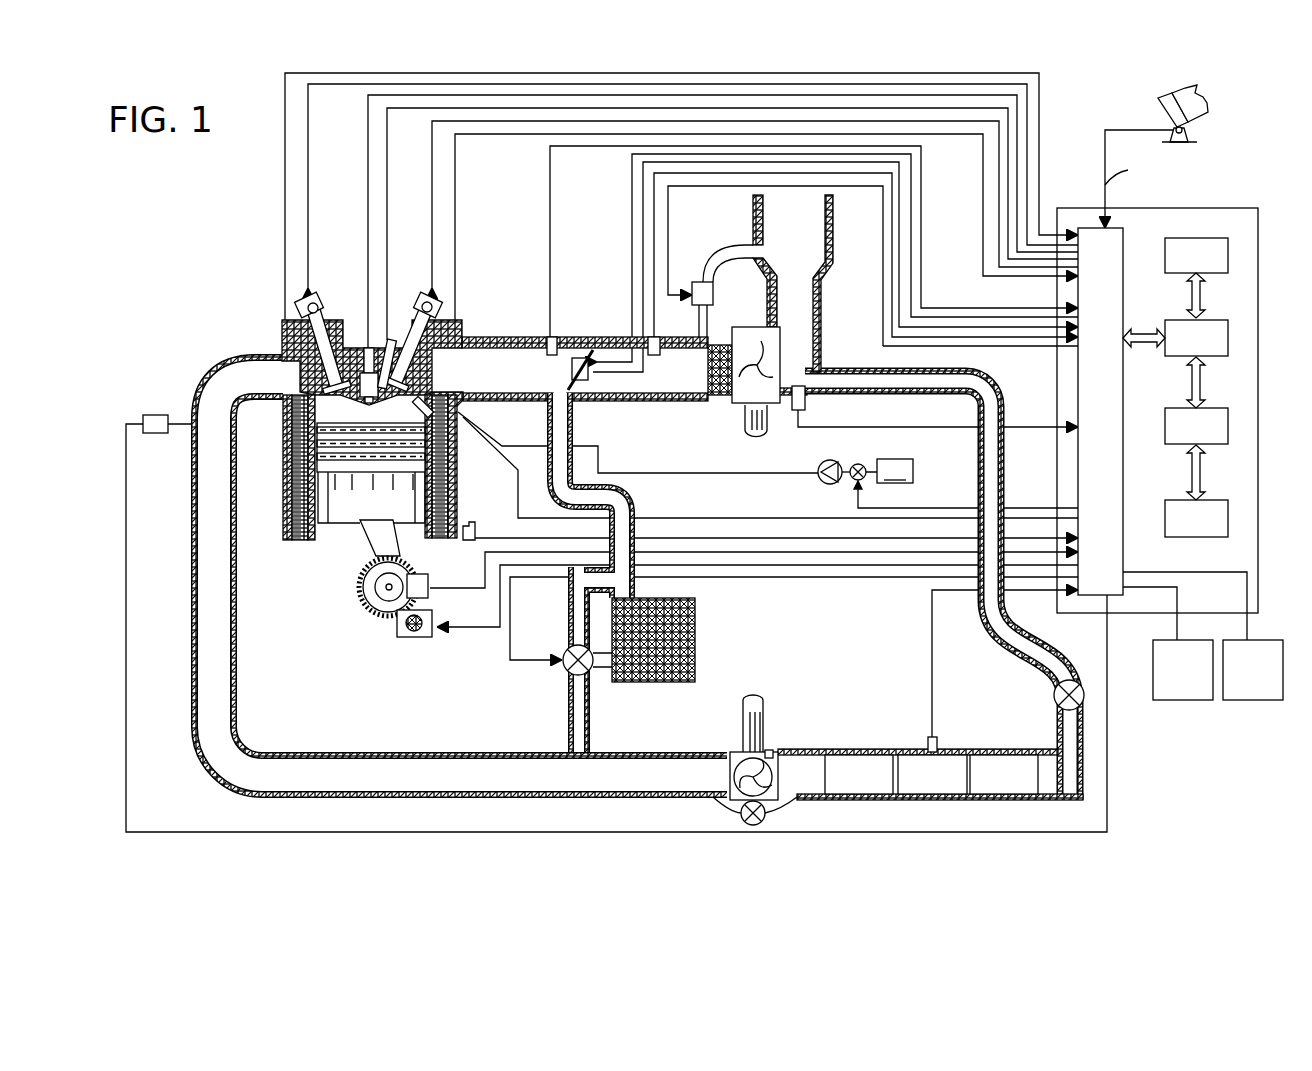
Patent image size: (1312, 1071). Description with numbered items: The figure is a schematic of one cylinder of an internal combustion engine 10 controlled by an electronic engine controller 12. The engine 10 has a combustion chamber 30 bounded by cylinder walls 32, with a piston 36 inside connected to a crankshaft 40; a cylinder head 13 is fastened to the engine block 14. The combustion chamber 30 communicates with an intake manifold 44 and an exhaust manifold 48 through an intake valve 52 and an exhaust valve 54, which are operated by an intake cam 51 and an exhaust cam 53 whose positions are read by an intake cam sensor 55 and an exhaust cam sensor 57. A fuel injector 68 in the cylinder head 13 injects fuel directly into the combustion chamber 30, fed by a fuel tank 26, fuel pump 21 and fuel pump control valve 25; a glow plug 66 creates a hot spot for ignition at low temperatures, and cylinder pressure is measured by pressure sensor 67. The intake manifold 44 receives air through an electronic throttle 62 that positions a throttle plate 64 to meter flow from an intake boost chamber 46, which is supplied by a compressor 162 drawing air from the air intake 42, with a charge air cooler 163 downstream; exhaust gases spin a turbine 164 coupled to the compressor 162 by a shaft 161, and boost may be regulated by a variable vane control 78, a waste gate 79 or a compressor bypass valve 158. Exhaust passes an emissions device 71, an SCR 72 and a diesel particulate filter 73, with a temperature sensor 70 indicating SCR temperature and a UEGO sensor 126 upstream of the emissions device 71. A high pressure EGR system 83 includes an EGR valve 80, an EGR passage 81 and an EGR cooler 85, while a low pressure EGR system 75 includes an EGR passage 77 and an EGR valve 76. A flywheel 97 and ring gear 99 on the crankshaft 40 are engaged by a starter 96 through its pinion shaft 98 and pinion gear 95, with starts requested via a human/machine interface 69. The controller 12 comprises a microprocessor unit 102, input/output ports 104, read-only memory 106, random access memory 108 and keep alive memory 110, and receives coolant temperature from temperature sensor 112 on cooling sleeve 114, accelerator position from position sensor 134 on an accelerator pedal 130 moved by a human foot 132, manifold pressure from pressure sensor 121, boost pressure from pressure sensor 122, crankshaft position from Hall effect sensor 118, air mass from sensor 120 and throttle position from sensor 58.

The internal combustion engine 10 is at (228, 276).
The electronic engine controller 12 is at (1175, 410).
The cylinder head 13 is at (453, 325).
The engine block 14 is at (285, 428).
The fuel pump 21 is at (842, 450).
The fuel pump control valve 25 is at (855, 480).
The fuel tank 26 is at (895, 471).
The combustion chamber 30 is at (310, 480).
The cylinder walls 32 is at (323, 530).
The piston 36 is at (357, 497).
The crankshaft 40 is at (372, 612).
The air intake 42 is at (808, 260).
The intake manifold 44 is at (515, 383).
The intake boost chamber 46 is at (677, 383).
The exhaust manifold 48 is at (265, 386).
The intake cam 51 is at (422, 292).
The intake valve 52 is at (398, 386).
The exhaust cam 53 is at (320, 292).
The exhaust valve 54 is at (330, 387).
The intake cam sensor 55 is at (440, 306).
The exhaust cam sensor 57 is at (305, 300).
The throttle position sensor 58 is at (590, 382).
The electronic throttle 62 is at (553, 337).
The throttle plate 64 is at (585, 352).
The glow plug 66 is at (365, 345).
The pressure sensor 67 is at (392, 338).
The fuel injector 68 is at (445, 415).
The human/machine interface 69 is at (1183, 670).
The temperature sensor 70 is at (934, 737).
The emissions device 71 is at (930, 774).
The SCR 72 is at (932, 774).
The diesel particulate filter 73 is at (1004, 774).
The low pressure EGR system 75 is at (1000, 662).
The EGR valve 76 is at (1055, 688).
The EGR passage 77 is at (978, 630).
The variable vane control 78 is at (773, 752).
The waste gate 79 is at (766, 820).
The EGR valve 80 is at (565, 650).
The EGR passage 81 is at (560, 432).
The high pressure EGR system 83 is at (530, 672).
The EGR cooler 85 is at (697, 628).
The pinion gear 95 is at (418, 638).
The starter 96 is at (433, 636).
The flywheel 97 is at (368, 587).
The pinion shaft 98 is at (410, 637).
The ring gear 99 is at (388, 622).
The microprocessor unit 102 is at (1228, 337).
The input/output ports 104 is at (1123, 245).
The read-only memory 106 is at (1228, 257).
The random access memory 108 is at (1228, 427).
The keep alive memory 110 is at (1228, 517).
The temperature sensor 112 is at (478, 520).
The cooling sleeve 114 is at (293, 465).
The Hall effect sensor 118 is at (430, 585).
The air mass sensor 120 is at (805, 400).
The pressure sensor 121 is at (553, 333).
The pressure sensor 122 is at (657, 338).
The UEGO sensor 126 is at (143, 424).
The accelerator pedal 130 is at (1199, 147).
The human foot 132 is at (1207, 95).
The position sensor 134 is at (1188, 132).
The compressor bypass valve 158 is at (696, 284).
The shaft 161 is at (760, 700).
The compressor 162 is at (742, 405).
The charge air cooler 163 is at (710, 398).
The turbine 164 is at (733, 752).